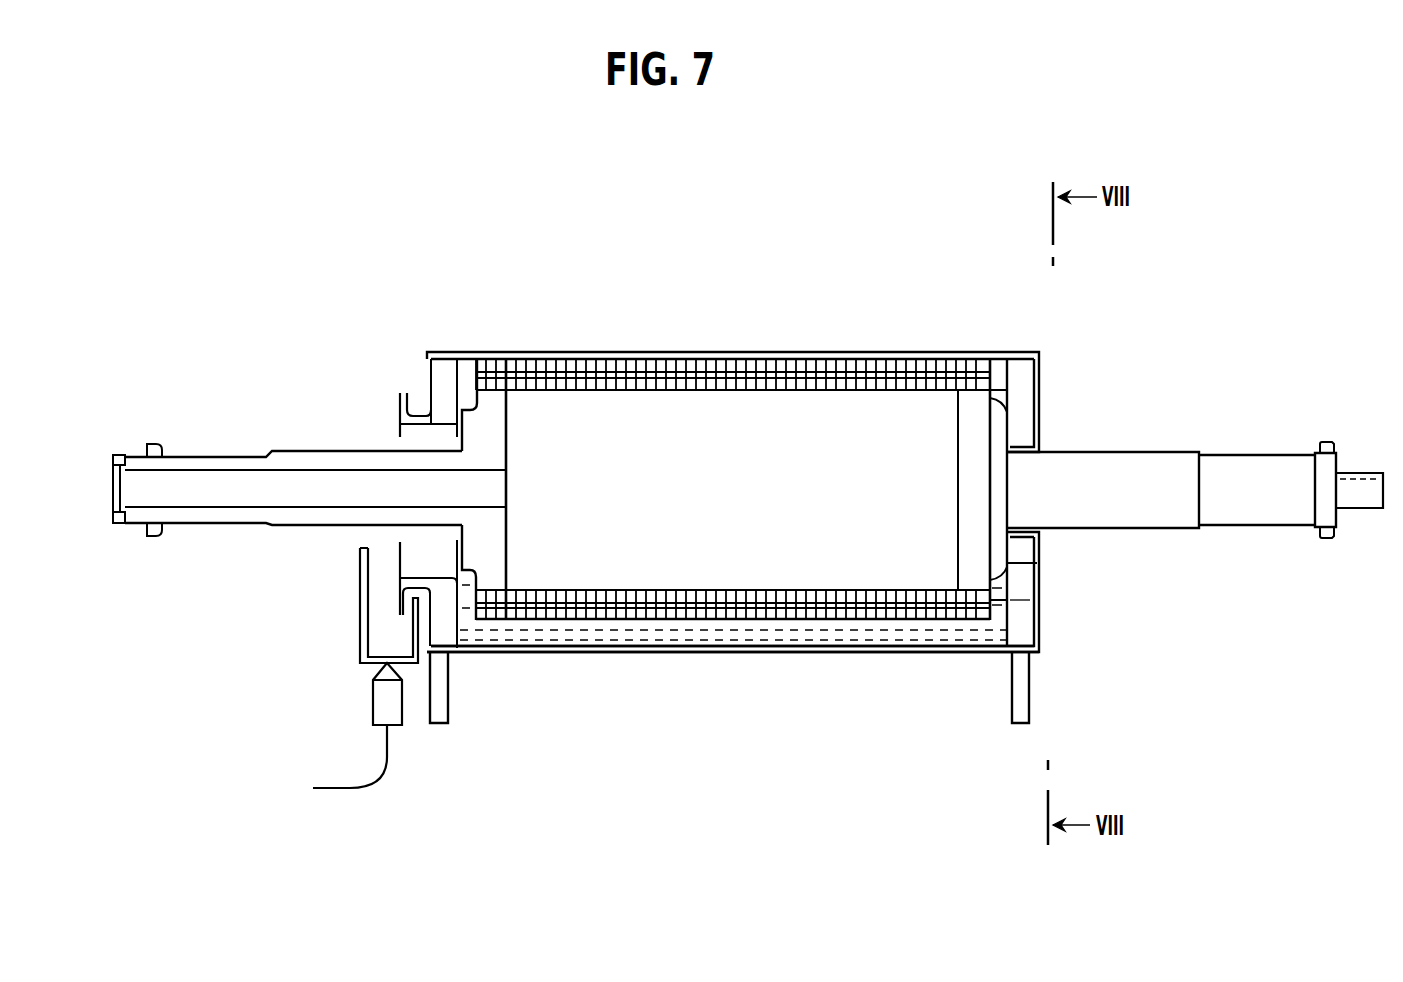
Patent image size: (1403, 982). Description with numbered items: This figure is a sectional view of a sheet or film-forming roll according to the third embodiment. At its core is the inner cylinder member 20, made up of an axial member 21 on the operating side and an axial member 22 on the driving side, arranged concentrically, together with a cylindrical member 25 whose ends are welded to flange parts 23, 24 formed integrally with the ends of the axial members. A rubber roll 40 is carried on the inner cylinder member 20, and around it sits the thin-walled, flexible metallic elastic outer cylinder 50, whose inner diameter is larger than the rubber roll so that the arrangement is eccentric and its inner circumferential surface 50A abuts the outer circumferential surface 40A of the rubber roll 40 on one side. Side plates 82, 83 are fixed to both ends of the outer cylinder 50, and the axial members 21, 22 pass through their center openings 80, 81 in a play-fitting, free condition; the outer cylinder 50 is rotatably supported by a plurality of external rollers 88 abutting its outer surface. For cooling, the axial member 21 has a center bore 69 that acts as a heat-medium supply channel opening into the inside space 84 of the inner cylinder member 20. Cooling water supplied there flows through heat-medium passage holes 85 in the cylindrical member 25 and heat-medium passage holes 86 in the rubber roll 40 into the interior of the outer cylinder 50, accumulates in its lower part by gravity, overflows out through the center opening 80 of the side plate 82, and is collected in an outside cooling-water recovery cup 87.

The inner cylinder member 20 is at (975, 408).
The axial member 21 is at (288, 455).
The axial member 22 is at (1162, 510).
The flange part 23 is at (492, 410).
The flange part 24 is at (975, 440).
The cylindrical member 25 is at (658, 380).
The rubber roll 40 is at (612, 362).
The outer circumferential surface 40A is at (762, 353).
The metallic elastic outer cylinder 50 is at (880, 652).
The inner circumferential surface 50A is at (795, 365).
The center bore 69 is at (195, 500).
The center opening 80 is at (410, 535).
The center opening 81 is at (1030, 545).
The side plate 82 is at (437, 382).
The side plate 83 is at (1023, 605).
The inside space 84 is at (617, 545).
The heat-medium passage hole 85 is at (932, 380).
The heat-medium passage hole 86 is at (910, 365).
The cooling-water recovery cup 87 is at (353, 633).
The external roller 88 is at (440, 703).